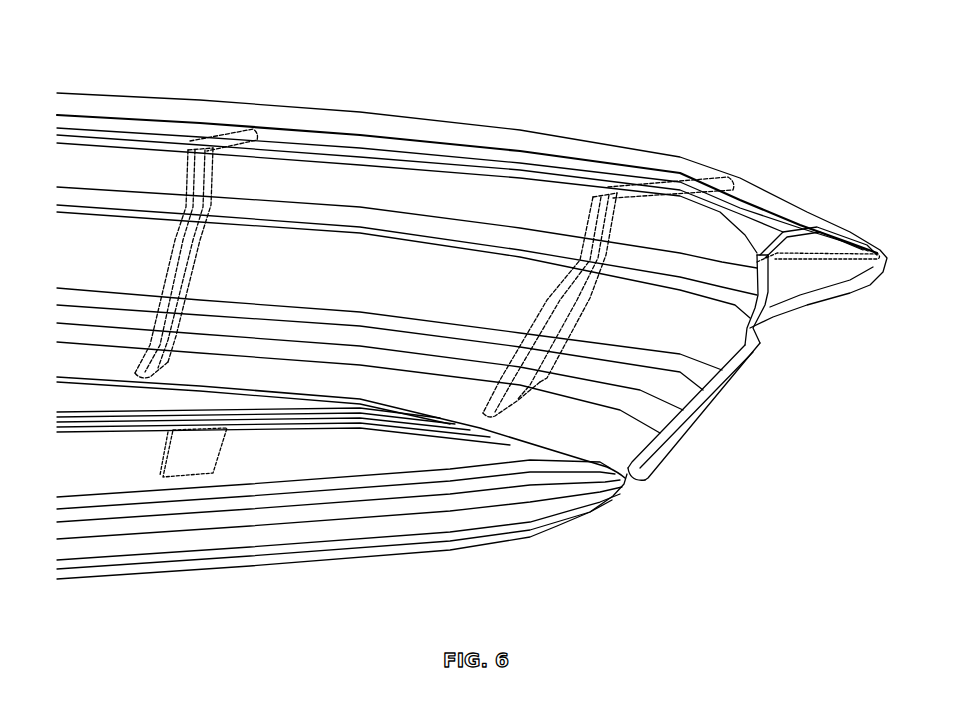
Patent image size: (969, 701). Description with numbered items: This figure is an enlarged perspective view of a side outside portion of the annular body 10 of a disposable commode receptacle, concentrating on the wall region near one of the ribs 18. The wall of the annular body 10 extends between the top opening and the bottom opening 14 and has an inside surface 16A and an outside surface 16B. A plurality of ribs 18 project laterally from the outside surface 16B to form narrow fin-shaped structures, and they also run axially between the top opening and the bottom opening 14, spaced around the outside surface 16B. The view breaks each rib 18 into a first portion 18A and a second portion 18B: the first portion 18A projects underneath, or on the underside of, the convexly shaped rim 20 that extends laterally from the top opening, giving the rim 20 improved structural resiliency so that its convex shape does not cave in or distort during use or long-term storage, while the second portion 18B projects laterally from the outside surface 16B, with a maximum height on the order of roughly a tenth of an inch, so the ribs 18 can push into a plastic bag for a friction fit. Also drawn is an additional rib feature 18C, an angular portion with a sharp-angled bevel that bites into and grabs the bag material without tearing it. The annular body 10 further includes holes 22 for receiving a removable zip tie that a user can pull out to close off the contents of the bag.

The annular body 10 is at (425, 80).
The bottom opening 14 is at (557, 525).
The inside surface 16A is at (333, 462).
The outside surface 16B is at (662, 325).
The ribs 18 is at (670, 462).
The first portion 18A is at (827, 250).
The second portion 18B is at (690, 422).
The additional rib feature 18C is at (737, 372).
The rim 20 is at (587, 143).
The holes 22 is at (160, 463).